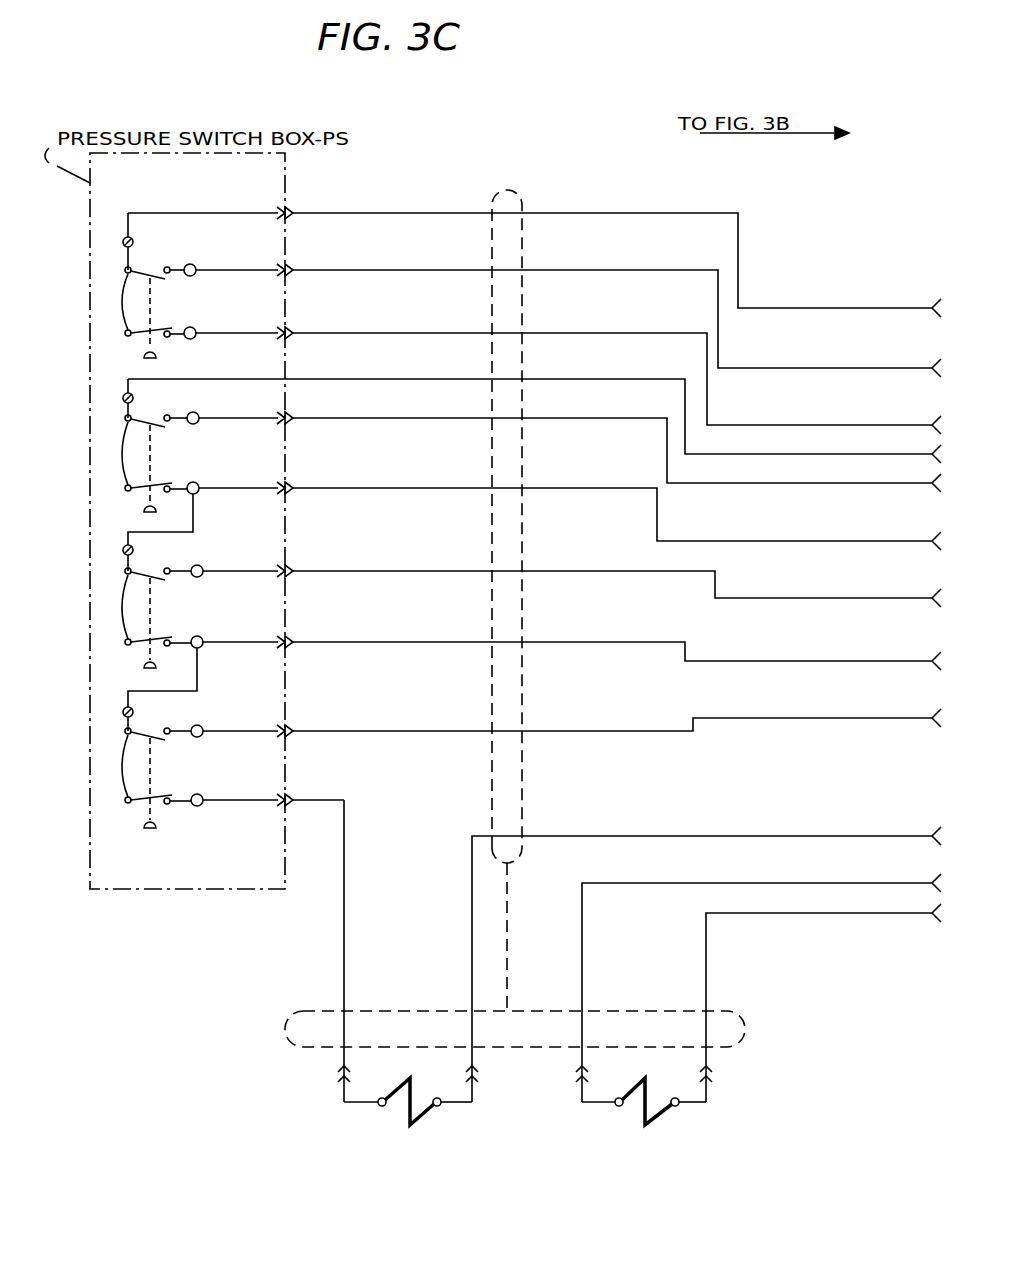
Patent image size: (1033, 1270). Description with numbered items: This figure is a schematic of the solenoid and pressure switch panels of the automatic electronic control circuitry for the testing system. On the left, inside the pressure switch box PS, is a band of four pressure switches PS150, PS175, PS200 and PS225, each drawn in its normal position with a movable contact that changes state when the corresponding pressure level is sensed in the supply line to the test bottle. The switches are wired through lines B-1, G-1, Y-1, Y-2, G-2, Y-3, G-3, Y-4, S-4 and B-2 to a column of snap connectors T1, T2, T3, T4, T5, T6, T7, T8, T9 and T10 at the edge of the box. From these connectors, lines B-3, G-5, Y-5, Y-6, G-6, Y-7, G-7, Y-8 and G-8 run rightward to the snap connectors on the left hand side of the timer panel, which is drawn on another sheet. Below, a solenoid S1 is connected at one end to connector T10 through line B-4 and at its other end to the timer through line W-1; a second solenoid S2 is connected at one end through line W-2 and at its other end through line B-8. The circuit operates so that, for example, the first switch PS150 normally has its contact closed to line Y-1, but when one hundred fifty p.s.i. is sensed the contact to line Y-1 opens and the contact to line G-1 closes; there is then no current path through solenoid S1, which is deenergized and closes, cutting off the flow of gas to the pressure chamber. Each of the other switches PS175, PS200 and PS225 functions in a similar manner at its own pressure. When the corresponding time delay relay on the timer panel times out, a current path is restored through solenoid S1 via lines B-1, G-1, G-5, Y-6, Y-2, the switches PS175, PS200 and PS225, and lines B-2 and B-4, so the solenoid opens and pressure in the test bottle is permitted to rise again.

The pressure switch PS150 is at (172, 285).
The pressure switch PS175 is at (171, 462).
The pressure switch PS200 is at (171, 626).
The pressure switch PS225 is at (171, 767).
The line B-1 is at (203, 200).
The line G-1 is at (237, 257).
The line Y-1 is at (237, 320).
The line Y-2 is at (206, 366).
The line G-2 is at (238, 405).
The line Y-3 is at (238, 475).
The line G-3 is at (240, 558).
The line Y-4 is at (240, 629).
The wire S-4 is at (240, 718).
The line B-2 is at (240, 787).
The line B-3 is at (716, 252).
The line G-5 is at (716, 311).
The line Y-5 is at (716, 371).
The line Y-6 is at (716, 408).
The line G-6 is at (716, 442).
The line Y-7 is at (716, 506).
The line G-7 is at (716, 576).
The line Y-8 is at (716, 643).
The line G-8 is at (716, 712).
The line W-1 is at (695, 956).
The line W-2 is at (749, 980).
The line B-4 is at (334, 951).
The line B-8 is at (811, 995).
The snap connector T1 is at (384, 204).
The snap connector T2 is at (384, 261).
The snap connector T3 is at (384, 324).
The snap connector T4 is at (388, 367).
The snap connector T5 is at (384, 409).
The snap connector T6 is at (384, 479).
The snap connector T7 is at (384, 562).
The snap connector T8 is at (384, 633).
The snap connector T9 is at (384, 722).
The snap connector T10 is at (314, 791).
The solenoid S1 is at (410, 1120).
The solenoid S2 is at (645, 1118).